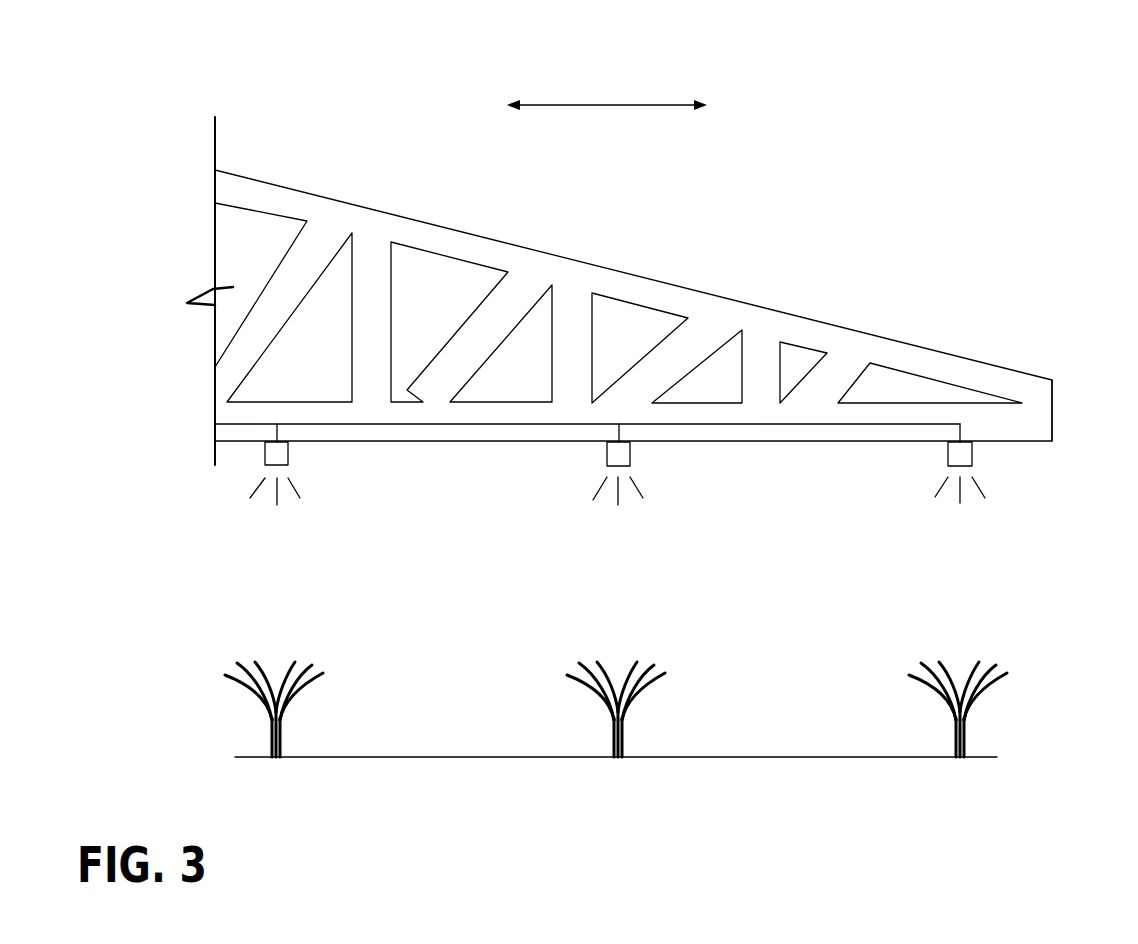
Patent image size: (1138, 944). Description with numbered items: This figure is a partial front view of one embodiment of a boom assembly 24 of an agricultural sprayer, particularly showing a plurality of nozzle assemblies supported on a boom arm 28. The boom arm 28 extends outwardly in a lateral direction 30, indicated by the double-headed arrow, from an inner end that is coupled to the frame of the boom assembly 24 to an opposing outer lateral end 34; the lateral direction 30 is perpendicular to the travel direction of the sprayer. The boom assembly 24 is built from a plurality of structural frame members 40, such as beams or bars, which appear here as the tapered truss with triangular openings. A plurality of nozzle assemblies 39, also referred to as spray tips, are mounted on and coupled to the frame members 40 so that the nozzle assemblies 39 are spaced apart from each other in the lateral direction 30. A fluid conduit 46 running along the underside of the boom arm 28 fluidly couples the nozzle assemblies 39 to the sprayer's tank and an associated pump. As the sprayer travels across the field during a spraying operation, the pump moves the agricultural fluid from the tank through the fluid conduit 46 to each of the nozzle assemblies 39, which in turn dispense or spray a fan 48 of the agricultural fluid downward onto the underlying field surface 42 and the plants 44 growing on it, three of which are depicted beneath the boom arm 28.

The boom assembly 24 is at (288, 84).
The boom arm 28 is at (882, 305).
The lateral direction 30 is at (632, 106).
The outer lateral end 34 is at (1092, 408).
The nozzle assembly 39 is at (288, 455).
The structural frame member 40 is at (480, 322).
The field surface 42 is at (402, 755).
The plants 44 is at (228, 716).
The fluid conduit 46 is at (797, 425).
The fan 48 is at (265, 528).